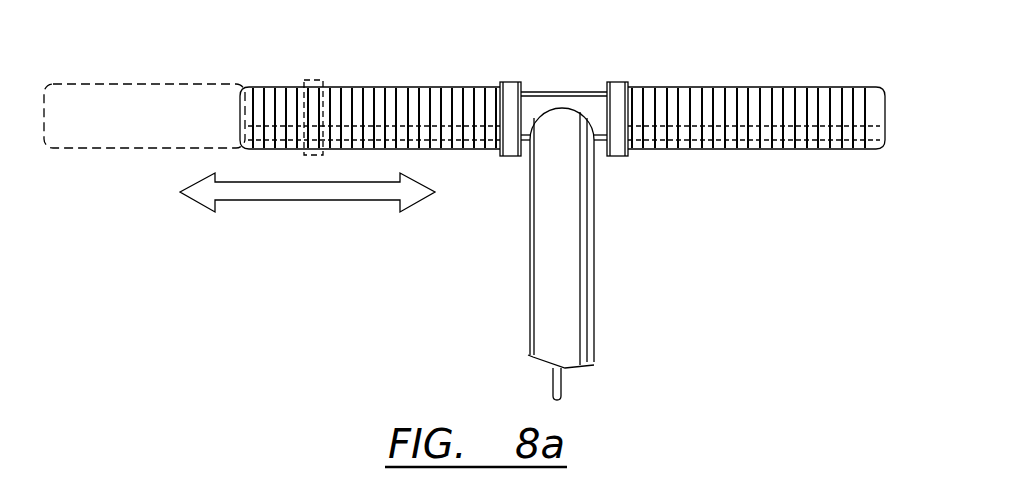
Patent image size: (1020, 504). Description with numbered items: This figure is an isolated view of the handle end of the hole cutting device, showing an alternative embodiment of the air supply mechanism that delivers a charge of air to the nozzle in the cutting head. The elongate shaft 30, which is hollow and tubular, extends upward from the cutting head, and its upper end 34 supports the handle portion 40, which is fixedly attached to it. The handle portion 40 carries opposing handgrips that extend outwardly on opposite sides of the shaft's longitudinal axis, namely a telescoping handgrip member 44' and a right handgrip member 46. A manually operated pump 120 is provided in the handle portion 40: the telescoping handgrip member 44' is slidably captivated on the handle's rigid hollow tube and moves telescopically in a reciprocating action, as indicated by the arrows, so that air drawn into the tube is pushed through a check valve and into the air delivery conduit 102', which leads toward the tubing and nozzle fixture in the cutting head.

The elongate shaft 30 is at (604, 316).
The upper end of the shaft 34 is at (577, 170).
The handle portion 40 is at (632, 68).
The telescoping handgrip member 44' is at (272, 110).
The right handgrip member 46 is at (792, 95).
The air delivery conduit 102' is at (617, 387).
The manually operated pump 120 is at (452, 33).